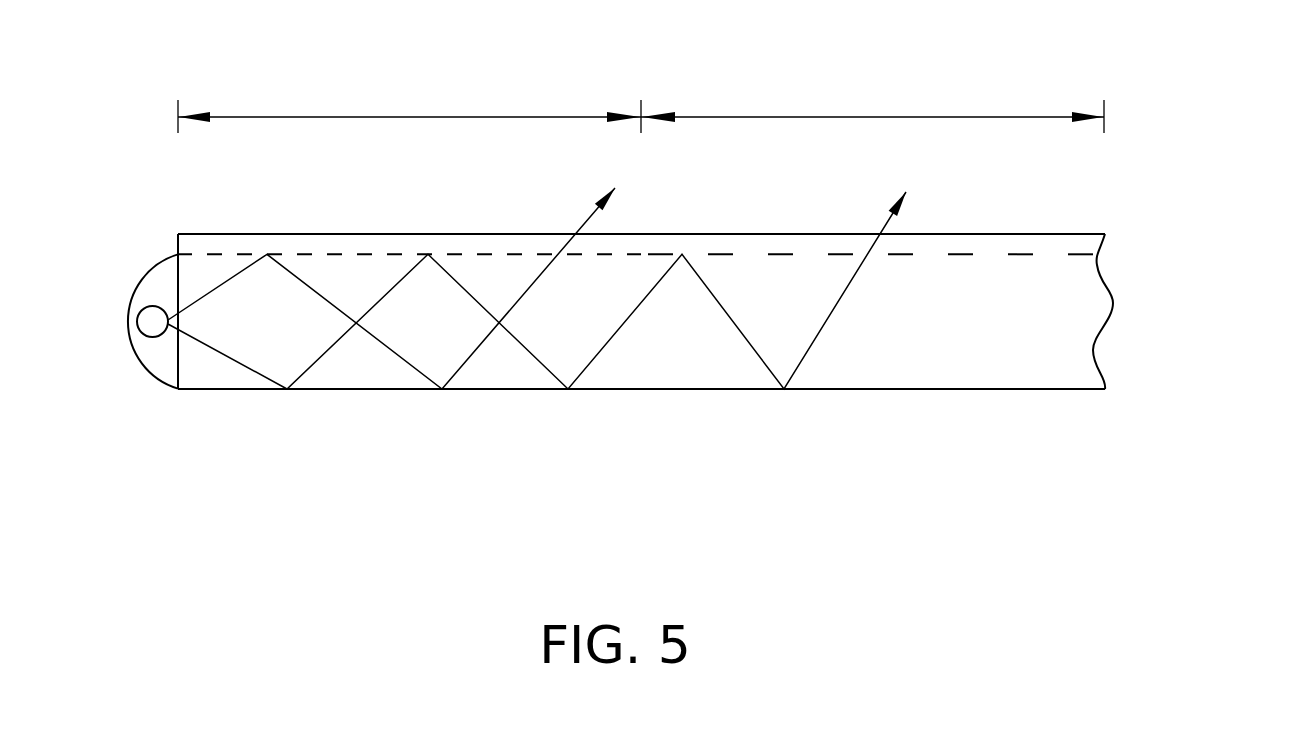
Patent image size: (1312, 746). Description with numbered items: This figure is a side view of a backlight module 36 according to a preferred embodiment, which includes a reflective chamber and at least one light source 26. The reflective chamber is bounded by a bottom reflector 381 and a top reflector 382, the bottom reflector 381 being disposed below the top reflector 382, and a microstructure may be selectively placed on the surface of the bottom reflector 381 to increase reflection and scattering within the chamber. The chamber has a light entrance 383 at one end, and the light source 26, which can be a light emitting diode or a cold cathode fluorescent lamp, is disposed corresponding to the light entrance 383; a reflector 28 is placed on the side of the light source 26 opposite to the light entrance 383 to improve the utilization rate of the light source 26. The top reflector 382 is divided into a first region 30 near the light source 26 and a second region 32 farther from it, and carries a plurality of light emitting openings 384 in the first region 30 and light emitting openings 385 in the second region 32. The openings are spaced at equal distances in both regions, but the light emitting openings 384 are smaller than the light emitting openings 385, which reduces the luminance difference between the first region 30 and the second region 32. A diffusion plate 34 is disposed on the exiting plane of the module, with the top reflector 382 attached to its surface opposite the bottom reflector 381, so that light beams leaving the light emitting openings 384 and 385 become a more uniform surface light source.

The light source 26 is at (152, 323).
The reflector 28 is at (122, 298).
The first region 30 is at (409, 107).
The second region 32 is at (872, 106).
The diffusion plate 34 is at (205, 242).
The backlight module 36 is at (1148, 110).
The bottom reflector 381 is at (1067, 389).
The top reflector 382 is at (963, 254).
The light entrance 383 is at (193, 320).
The light emitting openings 384 is at (380, 254).
The light emitting openings 385 is at (1050, 257).